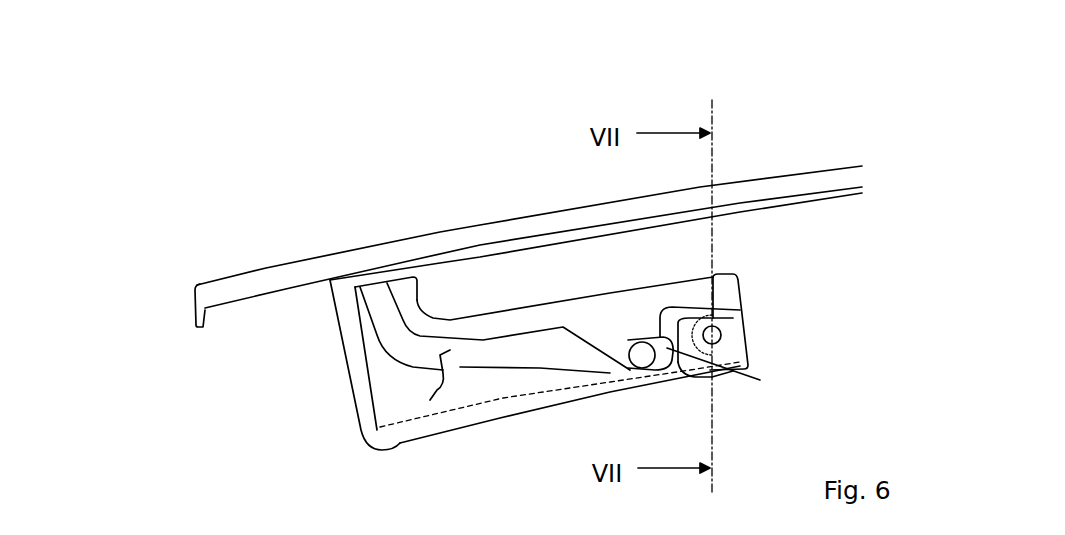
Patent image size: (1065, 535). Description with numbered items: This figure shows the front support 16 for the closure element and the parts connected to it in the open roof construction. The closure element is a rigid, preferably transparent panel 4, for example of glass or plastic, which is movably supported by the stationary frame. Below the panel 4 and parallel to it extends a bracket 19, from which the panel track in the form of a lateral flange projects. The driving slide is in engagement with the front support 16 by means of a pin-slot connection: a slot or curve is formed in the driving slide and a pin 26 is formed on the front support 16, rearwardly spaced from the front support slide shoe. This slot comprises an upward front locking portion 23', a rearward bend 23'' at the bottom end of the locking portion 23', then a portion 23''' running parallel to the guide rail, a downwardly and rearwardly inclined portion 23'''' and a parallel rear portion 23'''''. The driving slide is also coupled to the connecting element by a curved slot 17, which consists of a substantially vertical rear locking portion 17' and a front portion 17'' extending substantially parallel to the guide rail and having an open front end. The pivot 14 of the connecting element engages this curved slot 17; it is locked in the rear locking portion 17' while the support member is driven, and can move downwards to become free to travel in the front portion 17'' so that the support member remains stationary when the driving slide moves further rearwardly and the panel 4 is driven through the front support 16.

The panel 4 is at (800, 183).
The bracket 19 is at (833, 240).
The front support 16 is at (353, 382).
The upward front locking portion 23' is at (366, 247).
The rearward bend 23'' is at (495, 247).
The parallel portion 23''' is at (482, 429).
The downwardly and rearwardly inclined portion 23'''' is at (565, 241).
The parallel rear portion 23''''' is at (742, 399).
The pin 26 is at (642, 350).
The rear locking portion 17' is at (802, 340).
The pivot 14 is at (722, 335).
The curved slot 17 is at (504, 447).
The front portion 17'' is at (532, 444).